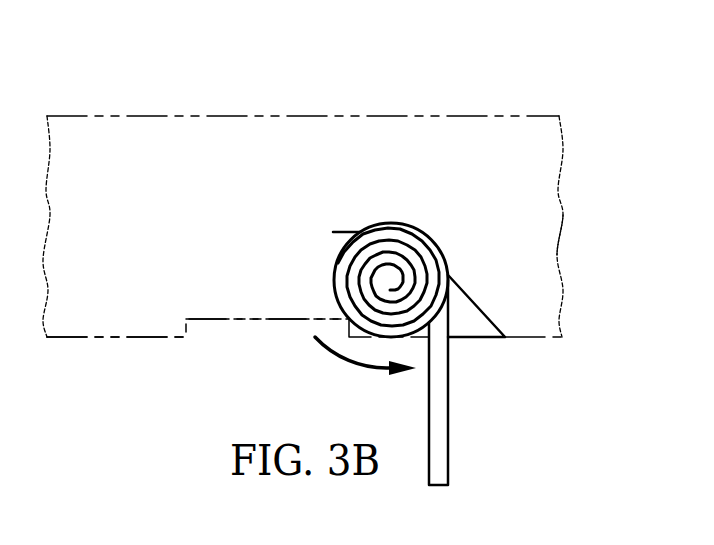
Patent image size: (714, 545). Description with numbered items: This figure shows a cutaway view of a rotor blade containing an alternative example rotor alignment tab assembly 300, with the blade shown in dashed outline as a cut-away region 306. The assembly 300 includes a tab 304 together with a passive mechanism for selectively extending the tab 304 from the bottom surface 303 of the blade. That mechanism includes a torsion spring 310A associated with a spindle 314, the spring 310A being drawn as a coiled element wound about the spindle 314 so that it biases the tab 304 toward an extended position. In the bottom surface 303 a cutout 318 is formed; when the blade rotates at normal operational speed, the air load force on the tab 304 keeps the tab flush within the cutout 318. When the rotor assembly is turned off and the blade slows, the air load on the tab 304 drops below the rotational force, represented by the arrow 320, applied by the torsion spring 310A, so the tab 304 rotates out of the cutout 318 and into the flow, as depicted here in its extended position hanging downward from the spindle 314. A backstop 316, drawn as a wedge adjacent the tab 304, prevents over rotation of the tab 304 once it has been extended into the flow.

The rotor alignment tab assembly 300 is at (216, 89).
The bottom surface 303 is at (158, 338).
The tab 304 is at (450, 414).
The housing 306 is at (596, 222).
The torsion spring 310A is at (347, 277).
The spindle 314 is at (428, 236).
The backstop 316 is at (478, 308).
The cutout 318 is at (268, 332).
The arrow 320 is at (353, 364).